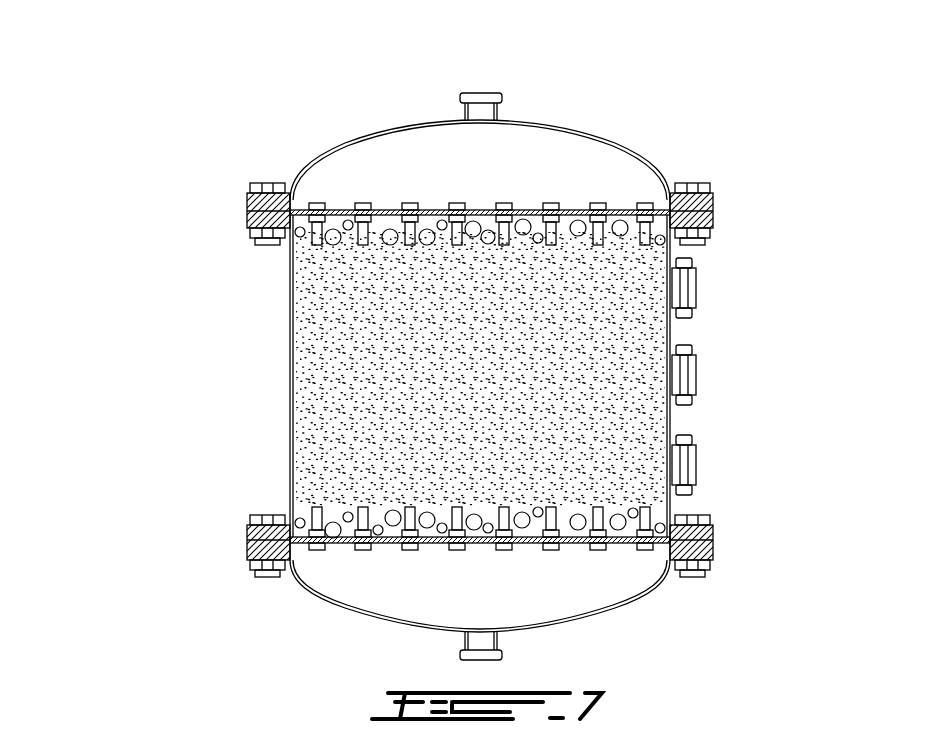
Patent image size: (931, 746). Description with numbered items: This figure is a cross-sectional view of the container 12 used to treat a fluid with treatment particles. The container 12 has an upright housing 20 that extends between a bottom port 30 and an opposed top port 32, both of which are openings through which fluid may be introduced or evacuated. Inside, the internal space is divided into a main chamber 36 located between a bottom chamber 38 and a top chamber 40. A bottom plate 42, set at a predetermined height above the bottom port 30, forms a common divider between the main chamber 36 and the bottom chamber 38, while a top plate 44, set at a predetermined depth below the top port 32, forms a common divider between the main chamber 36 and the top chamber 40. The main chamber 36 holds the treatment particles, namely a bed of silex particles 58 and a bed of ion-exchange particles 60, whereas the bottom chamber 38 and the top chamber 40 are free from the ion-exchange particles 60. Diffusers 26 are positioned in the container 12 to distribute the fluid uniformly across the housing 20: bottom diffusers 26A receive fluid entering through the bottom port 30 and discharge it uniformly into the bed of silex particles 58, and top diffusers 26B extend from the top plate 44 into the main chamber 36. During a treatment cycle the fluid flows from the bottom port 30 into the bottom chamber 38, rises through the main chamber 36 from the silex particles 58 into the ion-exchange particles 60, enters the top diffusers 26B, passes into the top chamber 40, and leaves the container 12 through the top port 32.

The container 12 is at (188, 172).
The housing 20 is at (290, 335).
The diffusers 26 is at (410, 543).
The bottom diffusers 26A is at (552, 545).
The top diffusers 26B is at (550, 232).
The bottom port 30 is at (478, 660).
The top port 32 is at (485, 92).
The main chamber 36 is at (365, 365).
The bottom chamber 38 is at (496, 606).
The top chamber 40 is at (446, 178).
The bottom plate 42 is at (303, 545).
The top plate 44 is at (338, 210).
The silex particles 58 is at (222, 213).
The ion-exchange particles 60 is at (735, 420).